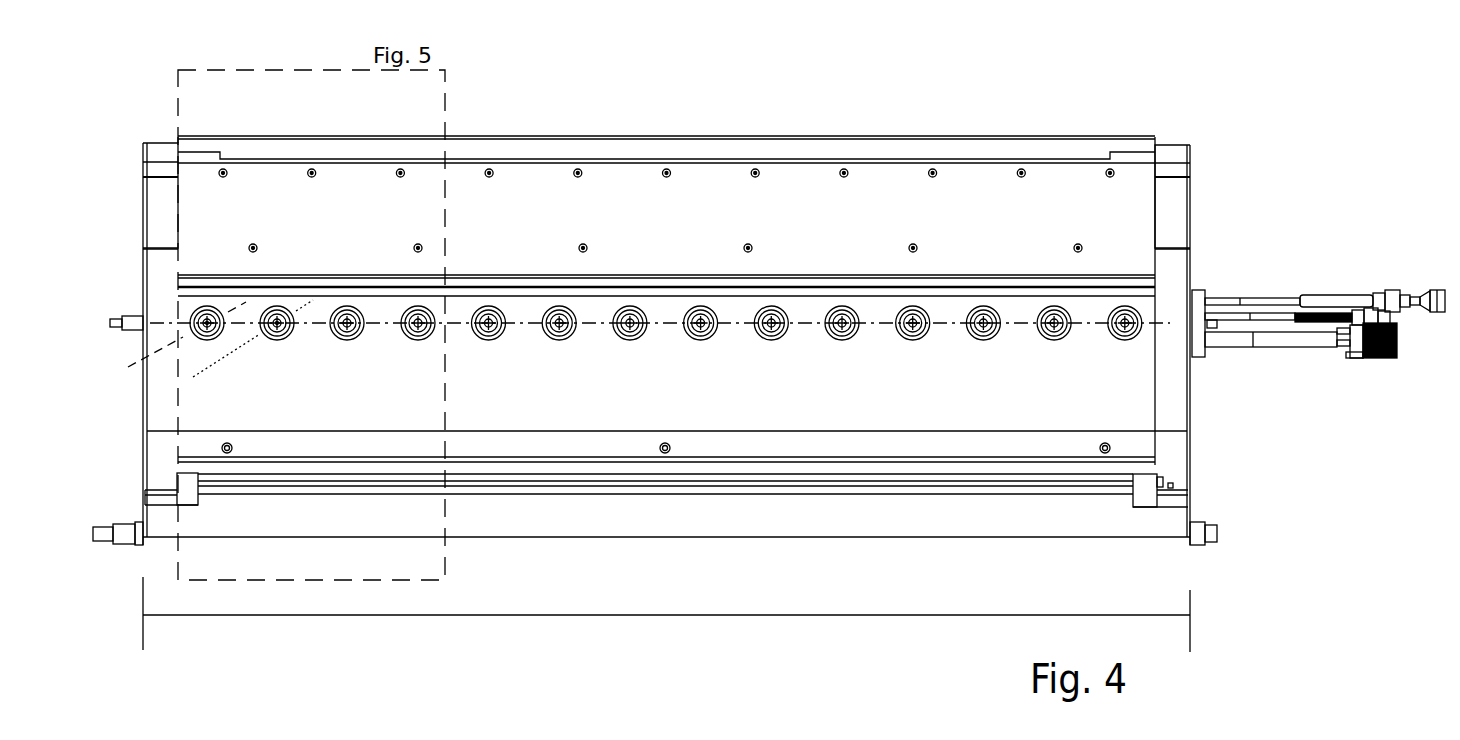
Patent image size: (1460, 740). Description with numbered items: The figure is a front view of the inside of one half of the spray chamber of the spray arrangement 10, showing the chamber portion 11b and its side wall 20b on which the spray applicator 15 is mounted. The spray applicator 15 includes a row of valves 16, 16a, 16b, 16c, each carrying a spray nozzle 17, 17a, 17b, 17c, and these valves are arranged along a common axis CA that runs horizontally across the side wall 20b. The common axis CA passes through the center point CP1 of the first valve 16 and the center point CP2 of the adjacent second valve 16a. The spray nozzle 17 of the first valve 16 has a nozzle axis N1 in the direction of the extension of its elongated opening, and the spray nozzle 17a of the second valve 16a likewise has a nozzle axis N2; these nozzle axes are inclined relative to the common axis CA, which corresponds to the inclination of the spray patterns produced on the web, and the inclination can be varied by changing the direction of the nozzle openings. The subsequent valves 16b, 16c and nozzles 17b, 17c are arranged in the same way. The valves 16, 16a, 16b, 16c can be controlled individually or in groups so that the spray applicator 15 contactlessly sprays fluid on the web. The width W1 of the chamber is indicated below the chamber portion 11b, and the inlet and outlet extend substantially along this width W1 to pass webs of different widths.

The spray arrangement 10 is at (313, 139).
The chamber portion 11b is at (490, 136).
The spray applicator 15 is at (1200, 289).
The first valve 16 is at (203, 306).
The second valve 16a is at (277, 306).
The valve 16b is at (347, 306).
The valve 16c is at (420, 306).
The spray nozzle 17 is at (207, 323).
The spray nozzle 17a is at (277, 323).
The spray nozzle 17b is at (347, 323).
The spray nozzle 17c is at (418, 323).
The side wall 20b is at (1017, 400).
The center point CP1 is at (207, 323).
The center point CP2 is at (277, 320).
The nozzle axis N1 is at (125, 373).
The nozzle axis N2 is at (212, 368).
The common axis CA is at (593, 323).
The width of the chamber W1 is at (666, 614).